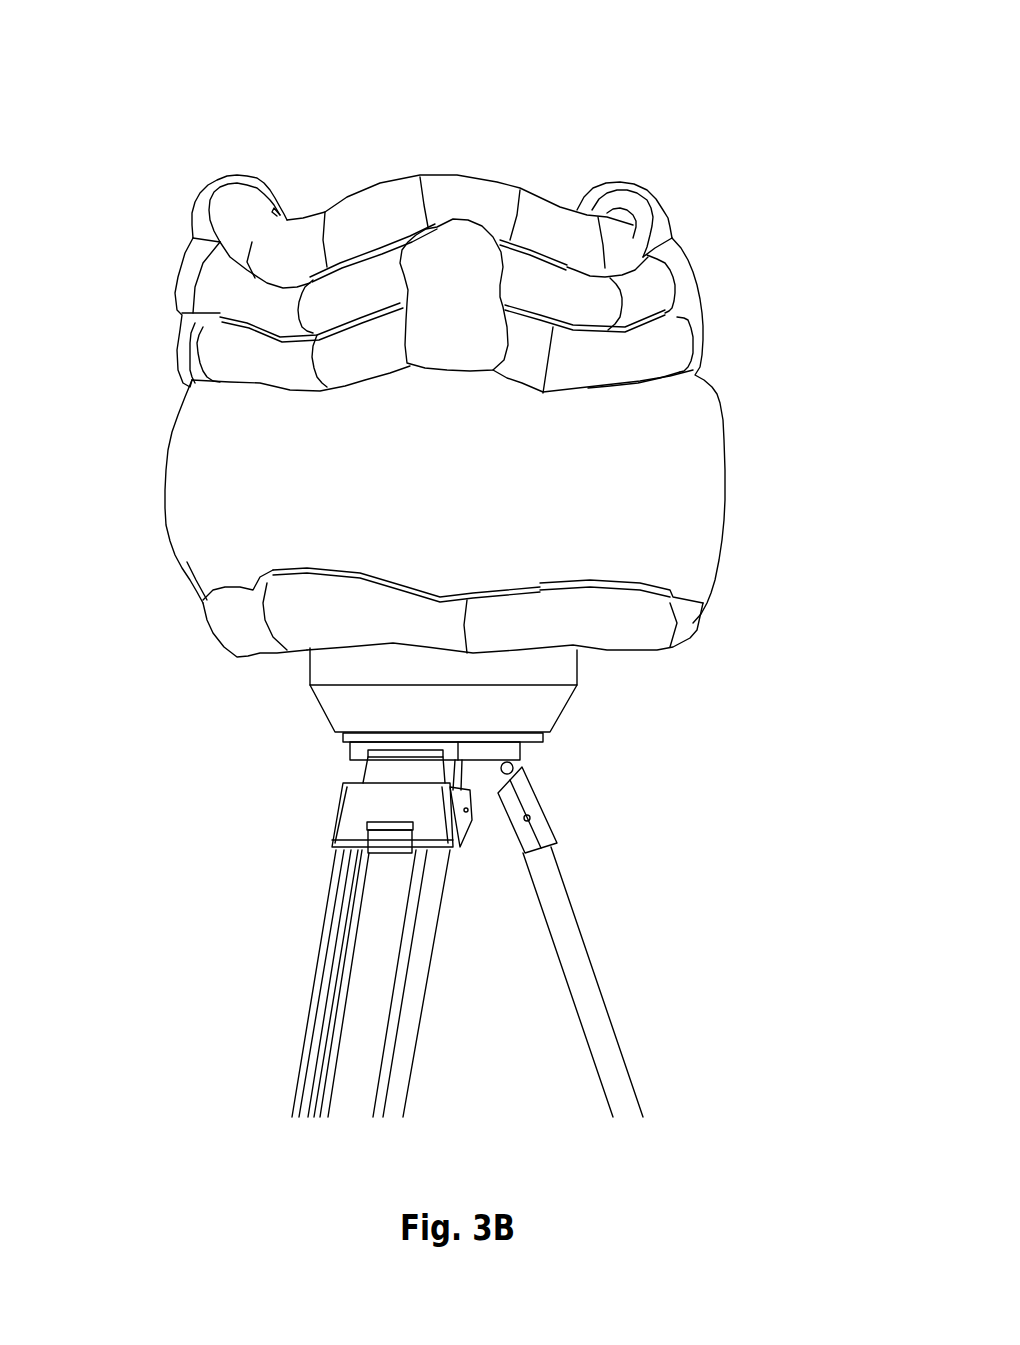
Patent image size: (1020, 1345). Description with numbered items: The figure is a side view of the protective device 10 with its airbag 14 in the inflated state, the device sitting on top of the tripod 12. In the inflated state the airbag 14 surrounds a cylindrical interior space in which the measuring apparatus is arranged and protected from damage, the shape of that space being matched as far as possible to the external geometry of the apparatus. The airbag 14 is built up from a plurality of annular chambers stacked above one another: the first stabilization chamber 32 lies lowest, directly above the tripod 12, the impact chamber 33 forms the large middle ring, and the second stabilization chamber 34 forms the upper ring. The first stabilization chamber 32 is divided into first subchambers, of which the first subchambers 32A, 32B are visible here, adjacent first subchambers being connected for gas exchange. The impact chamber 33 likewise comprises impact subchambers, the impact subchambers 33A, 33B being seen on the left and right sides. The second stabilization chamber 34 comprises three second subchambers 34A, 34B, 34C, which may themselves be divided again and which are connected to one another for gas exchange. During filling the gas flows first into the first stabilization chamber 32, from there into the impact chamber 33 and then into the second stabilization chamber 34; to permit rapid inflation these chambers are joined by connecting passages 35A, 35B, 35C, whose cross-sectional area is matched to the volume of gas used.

The protective device 10 is at (770, 418).
The tripod 12 is at (268, 942).
The airbag 14 is at (357, 100).
The first stabilization chamber 32 is at (195, 632).
The first subchamber 32A is at (248, 640).
The first subchamber 32B is at (632, 635).
The impact chamber 33 is at (167, 535).
The impact subchamber 33A is at (207, 462).
The impact subchamber 33B is at (690, 487).
The second stabilization chamber 34 is at (165, 283).
The second subchamber 34A is at (676, 344).
The second subchamber 34B is at (663, 280).
The second subchamber 34C is at (633, 238).
The connecting passage 35A is at (236, 165).
The connecting passage 35B is at (454, 165).
The connecting passage 35C is at (620, 165).